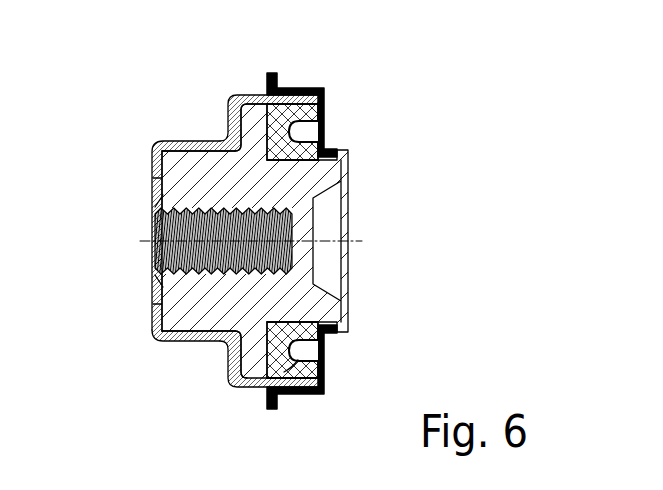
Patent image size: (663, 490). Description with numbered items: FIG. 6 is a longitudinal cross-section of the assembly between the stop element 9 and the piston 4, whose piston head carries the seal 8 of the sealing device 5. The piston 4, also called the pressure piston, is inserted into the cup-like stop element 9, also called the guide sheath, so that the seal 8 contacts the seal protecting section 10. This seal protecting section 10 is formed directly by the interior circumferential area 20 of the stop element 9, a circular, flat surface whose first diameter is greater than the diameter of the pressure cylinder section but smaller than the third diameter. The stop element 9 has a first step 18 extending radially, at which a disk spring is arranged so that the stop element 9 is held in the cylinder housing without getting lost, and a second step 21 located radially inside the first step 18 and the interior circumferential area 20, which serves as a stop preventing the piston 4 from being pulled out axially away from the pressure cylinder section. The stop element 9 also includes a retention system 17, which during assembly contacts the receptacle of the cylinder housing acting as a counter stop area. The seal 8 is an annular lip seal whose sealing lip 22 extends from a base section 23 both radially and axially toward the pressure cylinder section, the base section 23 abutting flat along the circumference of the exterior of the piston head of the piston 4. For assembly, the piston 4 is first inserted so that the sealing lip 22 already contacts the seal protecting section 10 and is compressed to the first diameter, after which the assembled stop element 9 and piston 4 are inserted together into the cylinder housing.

The piston 4 is at (213, 174).
The sealing device 5 is at (250, 223).
The seal 8 is at (277, 347).
The stop element 9 is at (190, 338).
The seal protecting section 10 is at (345, 138).
The retention system 17 is at (299, 92).
The first step 18 is at (229, 123).
The interior circumferential area 20 is at (284, 110).
The second step 21 is at (153, 158).
The sealing lip 22 is at (300, 360).
The base section 23 is at (290, 335).